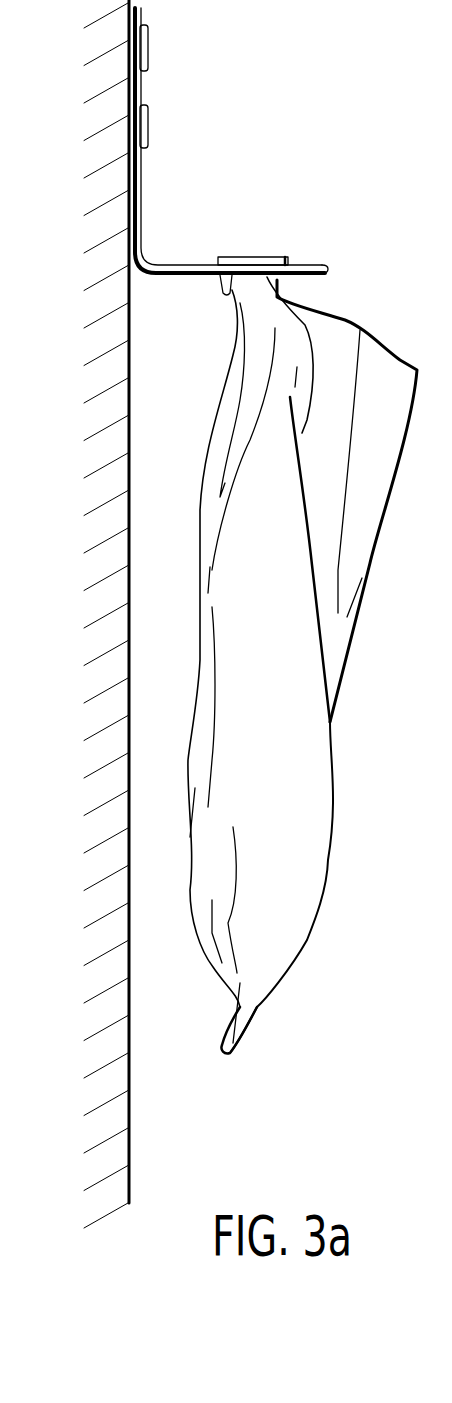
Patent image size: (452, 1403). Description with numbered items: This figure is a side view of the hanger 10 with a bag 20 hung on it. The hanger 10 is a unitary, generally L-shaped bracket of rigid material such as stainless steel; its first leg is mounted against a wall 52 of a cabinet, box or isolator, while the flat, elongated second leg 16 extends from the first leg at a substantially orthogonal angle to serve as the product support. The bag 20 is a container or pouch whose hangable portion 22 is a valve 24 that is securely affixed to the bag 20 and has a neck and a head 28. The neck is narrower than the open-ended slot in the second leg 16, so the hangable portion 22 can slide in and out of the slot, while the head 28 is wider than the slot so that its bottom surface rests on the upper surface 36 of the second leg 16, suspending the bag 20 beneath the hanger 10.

The hanger 10 is at (198, 158).
The wall 52 is at (110, 413).
The upper surface 36 is at (185, 265).
The second leg 16 is at (292, 263).
The head 28 is at (265, 257).
The hangable portion 22 is at (280, 286).
The valve 24 is at (255, 282).
The bag 20 is at (280, 664).